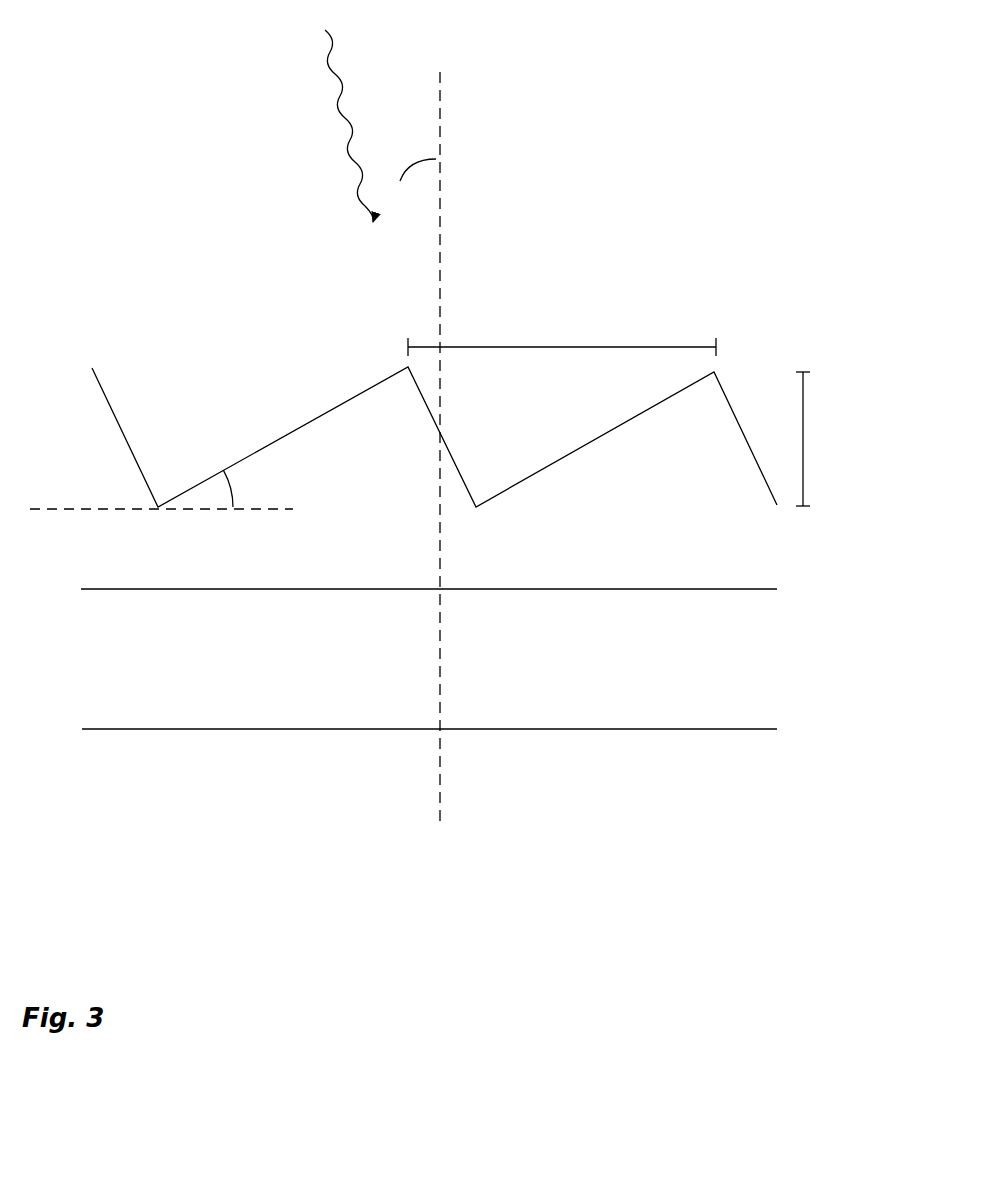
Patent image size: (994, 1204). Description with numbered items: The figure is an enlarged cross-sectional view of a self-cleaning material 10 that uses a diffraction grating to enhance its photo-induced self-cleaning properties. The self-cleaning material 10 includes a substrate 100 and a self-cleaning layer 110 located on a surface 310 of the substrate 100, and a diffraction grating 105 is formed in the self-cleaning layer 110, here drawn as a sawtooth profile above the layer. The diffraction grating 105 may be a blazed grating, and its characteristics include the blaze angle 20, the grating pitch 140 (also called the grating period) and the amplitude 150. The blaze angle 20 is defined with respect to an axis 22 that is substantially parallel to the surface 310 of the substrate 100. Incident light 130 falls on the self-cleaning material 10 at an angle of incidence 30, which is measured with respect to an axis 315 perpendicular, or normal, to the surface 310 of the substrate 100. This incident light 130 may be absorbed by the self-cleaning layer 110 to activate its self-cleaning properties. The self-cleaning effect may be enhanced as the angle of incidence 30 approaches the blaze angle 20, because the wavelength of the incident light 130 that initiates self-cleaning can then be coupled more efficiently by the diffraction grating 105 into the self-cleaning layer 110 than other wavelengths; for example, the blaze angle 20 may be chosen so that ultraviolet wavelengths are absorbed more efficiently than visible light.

The self-cleaning material 10 is at (197, 300).
The blaze angle 20 is at (246, 474).
The axis 22 is at (65, 508).
The angle of incidence 30 is at (414, 156).
The substrate 100 is at (525, 675).
The diffraction grating 105 is at (325, 411).
The self-cleaning layer 110 is at (525, 557).
The incident light 130 is at (320, 40).
The grating pitch 140 is at (648, 345).
The amplitude 150 is at (805, 436).
The surface 310 is at (752, 588).
The axis 315 is at (442, 299).